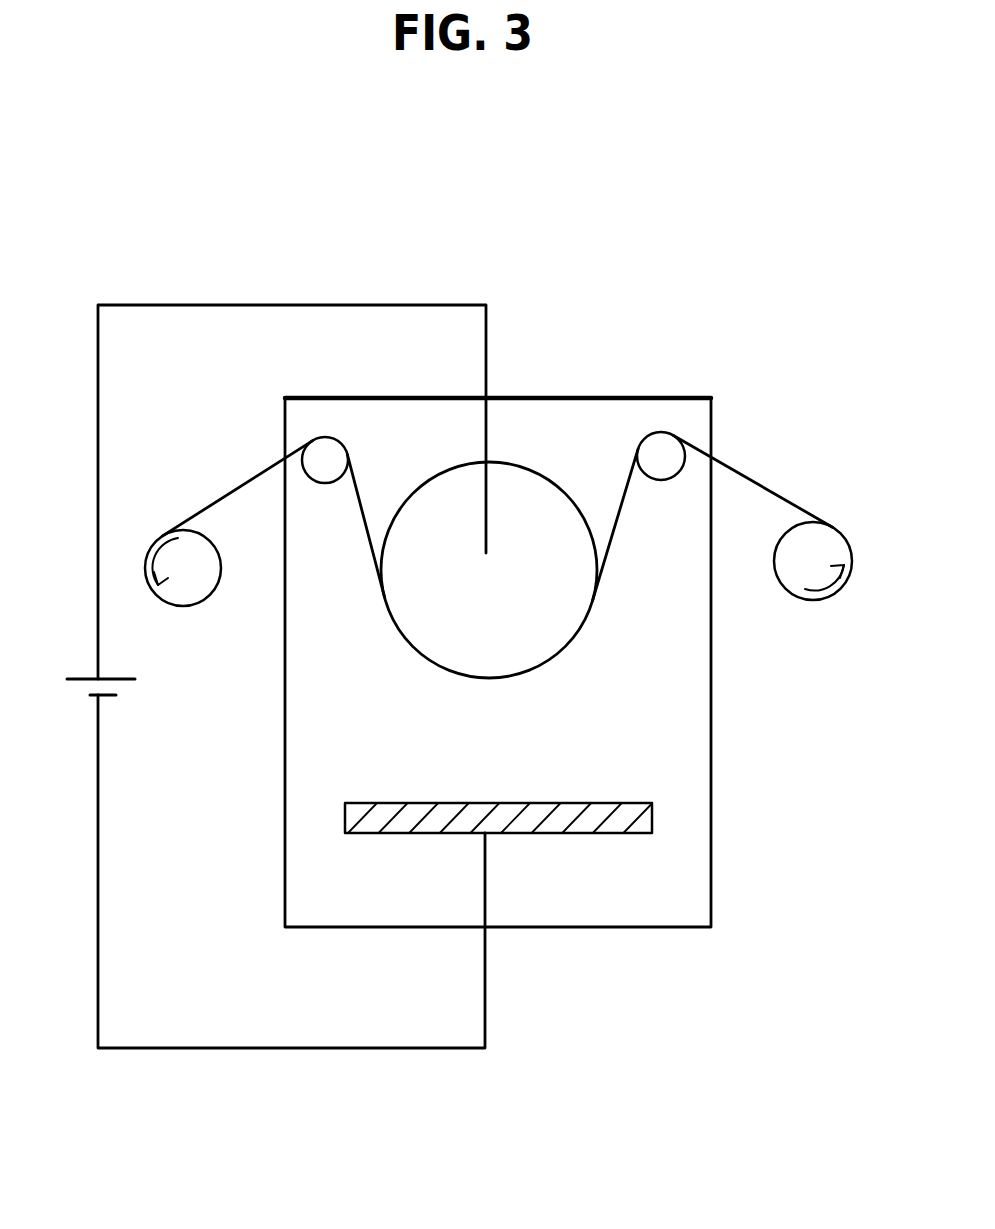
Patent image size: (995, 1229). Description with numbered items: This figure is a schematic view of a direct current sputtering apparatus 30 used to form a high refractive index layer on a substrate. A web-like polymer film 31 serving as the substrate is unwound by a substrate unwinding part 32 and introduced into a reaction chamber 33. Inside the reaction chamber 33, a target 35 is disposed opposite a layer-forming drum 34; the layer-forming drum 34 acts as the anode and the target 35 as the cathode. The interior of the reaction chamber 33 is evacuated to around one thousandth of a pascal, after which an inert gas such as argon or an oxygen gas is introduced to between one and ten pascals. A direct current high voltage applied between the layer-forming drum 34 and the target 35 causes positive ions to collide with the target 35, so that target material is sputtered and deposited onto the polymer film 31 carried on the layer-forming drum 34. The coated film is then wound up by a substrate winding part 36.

The direct current sputtering apparatus 30 is at (801, 327).
The web-like polymer film 31 is at (748, 473).
The substrate unwinding part 32 is at (797, 574).
The reaction chamber 33 is at (660, 747).
The layer-forming drum 34 is at (532, 537).
The target 35 is at (553, 820).
The substrate winding part 36 is at (187, 593).